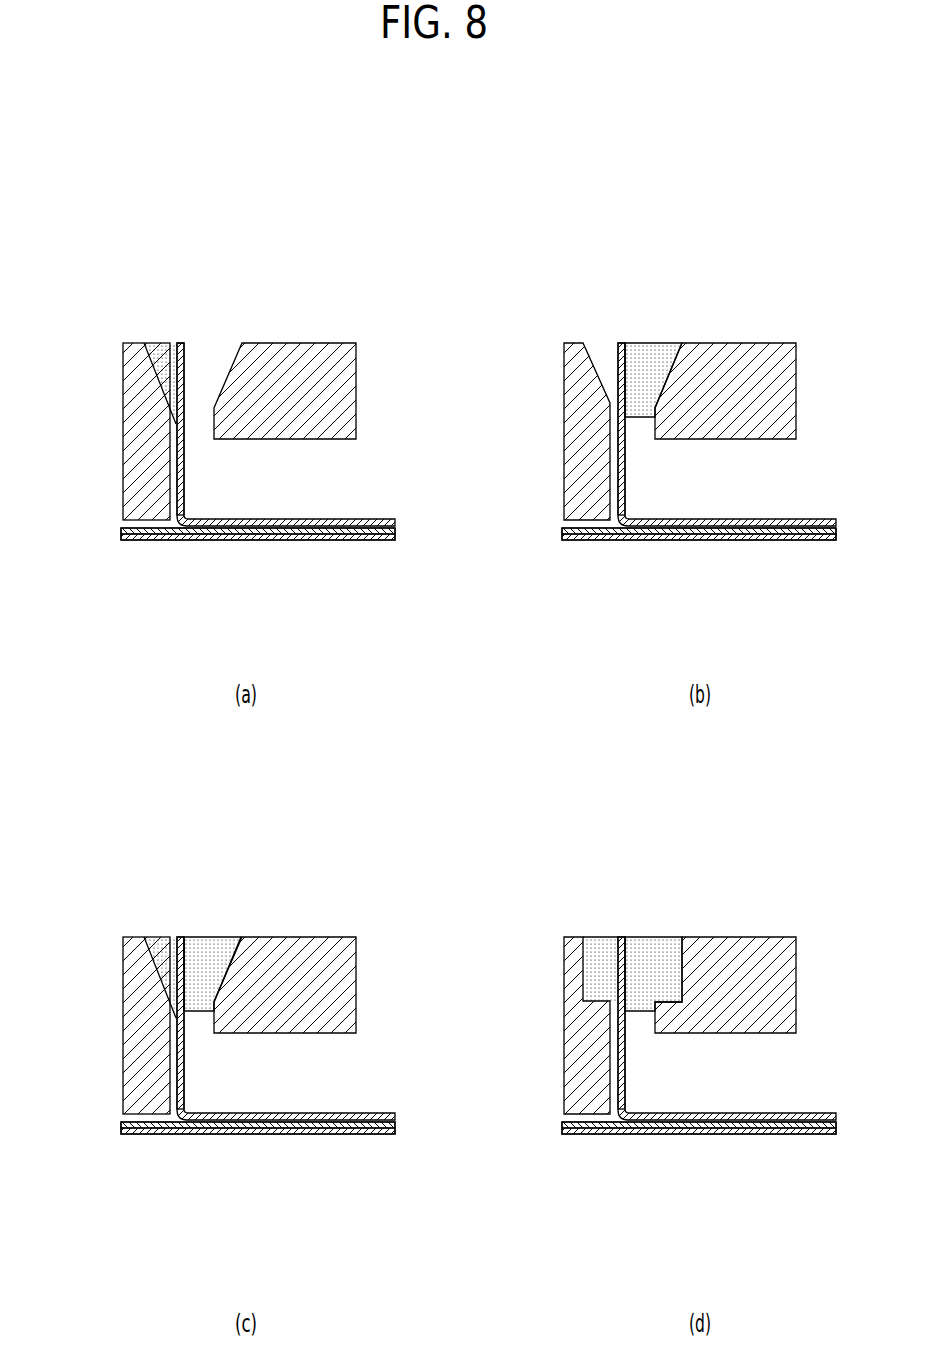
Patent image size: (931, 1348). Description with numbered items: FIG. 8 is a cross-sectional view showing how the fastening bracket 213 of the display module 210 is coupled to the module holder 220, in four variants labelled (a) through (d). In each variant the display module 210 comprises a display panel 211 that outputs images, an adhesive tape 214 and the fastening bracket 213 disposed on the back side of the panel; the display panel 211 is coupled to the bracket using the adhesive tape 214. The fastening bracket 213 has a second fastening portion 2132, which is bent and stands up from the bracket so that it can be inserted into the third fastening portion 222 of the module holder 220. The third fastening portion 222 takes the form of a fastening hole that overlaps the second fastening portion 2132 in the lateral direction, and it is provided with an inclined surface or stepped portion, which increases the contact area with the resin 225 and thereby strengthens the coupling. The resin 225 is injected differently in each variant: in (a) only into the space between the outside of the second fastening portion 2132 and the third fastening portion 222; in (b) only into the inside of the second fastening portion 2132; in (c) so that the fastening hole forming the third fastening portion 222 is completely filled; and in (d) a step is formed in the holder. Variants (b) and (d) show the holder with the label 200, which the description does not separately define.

The display module 200 is at (732, 382).
The display module 210 is at (238, 615).
The display panel 211 is at (330, 538).
The fastening bracket 213 is at (233, 523).
The second fastening portion 2132 is at (182, 474).
The adhesive tape 214 is at (278, 531).
The module holder 220 is at (278, 383).
The third fastening portion 222 is at (213, 362).
The resin 225 is at (162, 352).